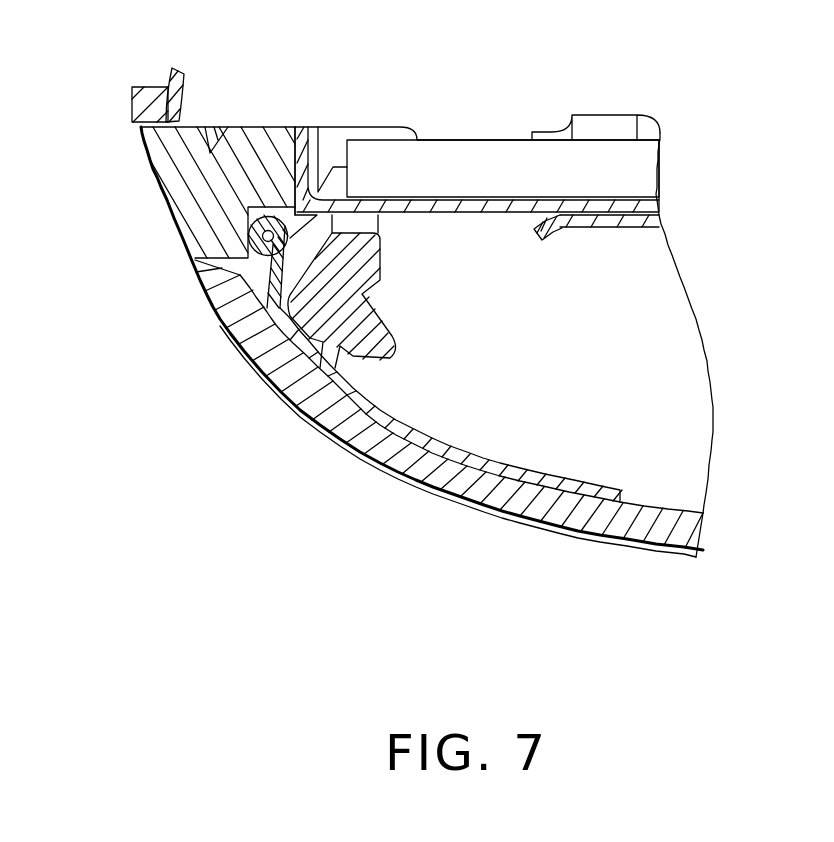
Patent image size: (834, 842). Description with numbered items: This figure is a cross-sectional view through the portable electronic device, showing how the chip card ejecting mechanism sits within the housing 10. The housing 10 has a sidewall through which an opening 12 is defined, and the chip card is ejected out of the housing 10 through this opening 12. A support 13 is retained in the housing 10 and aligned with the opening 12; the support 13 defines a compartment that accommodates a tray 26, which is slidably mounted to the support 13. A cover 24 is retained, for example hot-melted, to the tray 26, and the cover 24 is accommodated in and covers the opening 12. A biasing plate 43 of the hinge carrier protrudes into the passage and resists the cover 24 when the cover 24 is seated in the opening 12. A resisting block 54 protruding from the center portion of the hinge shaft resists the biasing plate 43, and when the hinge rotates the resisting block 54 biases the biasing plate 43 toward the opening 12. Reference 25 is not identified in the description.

The housing 10 is at (367, 440).
The opening 12 is at (205, 262).
The support 13 is at (626, 226).
The cover 24 is at (177, 176).
The protrusion 25 is at (262, 213).
The tray 26 is at (303, 150).
The biasing plate 43 is at (275, 268).
The resisting block 54 is at (247, 352).